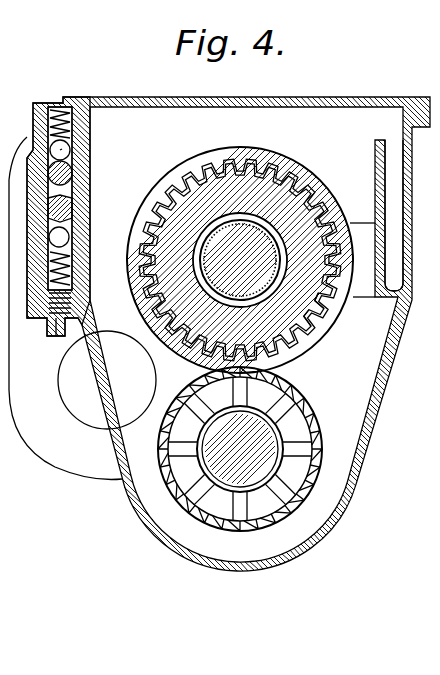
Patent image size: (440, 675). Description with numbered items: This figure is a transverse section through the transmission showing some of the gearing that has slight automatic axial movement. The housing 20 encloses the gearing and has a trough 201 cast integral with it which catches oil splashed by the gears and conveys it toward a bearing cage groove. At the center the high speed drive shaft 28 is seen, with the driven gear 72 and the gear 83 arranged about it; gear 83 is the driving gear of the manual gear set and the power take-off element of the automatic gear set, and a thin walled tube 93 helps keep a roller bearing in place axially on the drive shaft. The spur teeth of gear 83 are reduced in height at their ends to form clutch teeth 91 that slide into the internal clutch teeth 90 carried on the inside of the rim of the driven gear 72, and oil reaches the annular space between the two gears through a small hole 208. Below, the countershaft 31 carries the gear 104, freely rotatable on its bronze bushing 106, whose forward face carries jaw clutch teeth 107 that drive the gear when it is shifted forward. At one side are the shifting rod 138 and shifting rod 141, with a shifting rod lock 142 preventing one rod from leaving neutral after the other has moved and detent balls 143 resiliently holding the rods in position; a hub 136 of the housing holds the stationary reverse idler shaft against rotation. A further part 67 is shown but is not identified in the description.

The housing 20 is at (397, 336).
The trough 201 is at (392, 152).
The cover 67 is at (61, 312).
The shifting rod 138 is at (90, 177).
The detent balls 143 is at (33, 150).
The shifting rod lock 142 is at (88, 207).
The shifting rod 141 is at (88, 243).
The hub of the housing 136 is at (90, 417).
The gear 83 is at (308, 305).
The small hole 208 is at (232, 160).
The driven gear 72 is at (300, 178).
The thin walled tube 93 is at (272, 248).
The high speed drive shaft 28 is at (268, 240).
The clutch teeth 91 is at (316, 335).
The internal clutch teeth 90 is at (312, 356).
The countershaft 31 is at (272, 460).
The bronze bushing 106 is at (292, 403).
The gear 104 is at (307, 431).
The jaw clutch teeth 107 is at (283, 397).